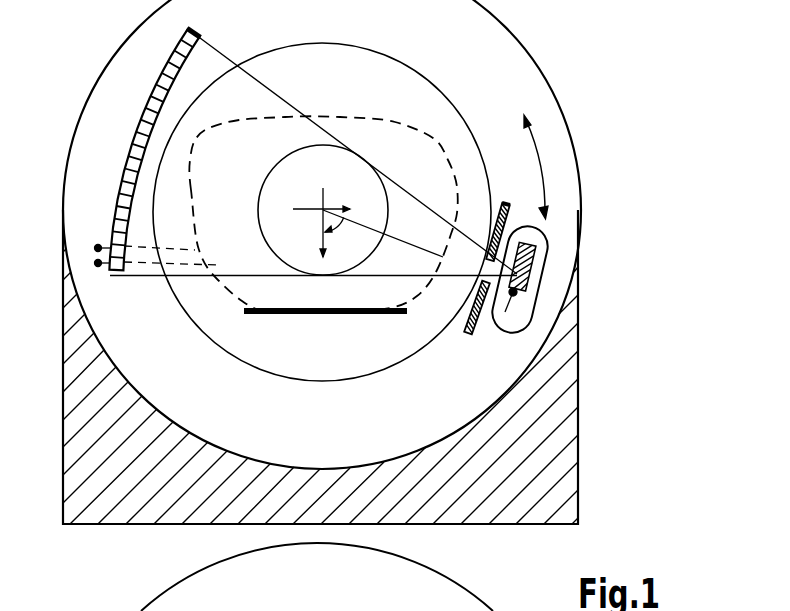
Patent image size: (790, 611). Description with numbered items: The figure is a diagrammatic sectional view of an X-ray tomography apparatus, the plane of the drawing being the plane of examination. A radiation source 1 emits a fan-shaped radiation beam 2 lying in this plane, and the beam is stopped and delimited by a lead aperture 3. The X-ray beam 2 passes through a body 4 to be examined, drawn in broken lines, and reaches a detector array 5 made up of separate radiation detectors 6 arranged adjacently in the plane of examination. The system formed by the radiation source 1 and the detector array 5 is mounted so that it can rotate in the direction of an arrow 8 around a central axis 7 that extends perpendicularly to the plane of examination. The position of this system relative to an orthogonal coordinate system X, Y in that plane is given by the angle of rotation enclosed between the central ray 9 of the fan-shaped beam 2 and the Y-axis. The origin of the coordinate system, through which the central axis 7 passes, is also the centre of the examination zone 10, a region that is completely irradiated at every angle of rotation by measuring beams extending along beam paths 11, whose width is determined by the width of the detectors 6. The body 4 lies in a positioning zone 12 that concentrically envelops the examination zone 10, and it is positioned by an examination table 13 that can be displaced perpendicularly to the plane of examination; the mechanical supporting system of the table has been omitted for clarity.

The radiation source 1 is at (529, 321).
The fan-shaped radiation beam 2 is at (463, 255).
The lead aperture 3 is at (506, 203).
The body to be examined 4 is at (403, 126).
The detector array 5 is at (189, 29).
The radiation detectors 6 is at (165, 86).
The central axis 7 is at (324, 209).
The arrow 8 is at (538, 151).
The central ray 9 is at (416, 247).
The examination zone 10 is at (274, 188).
The beam paths 11 is at (138, 263).
The positioning zone 12 is at (392, 72).
The examination table 13 is at (402, 313).